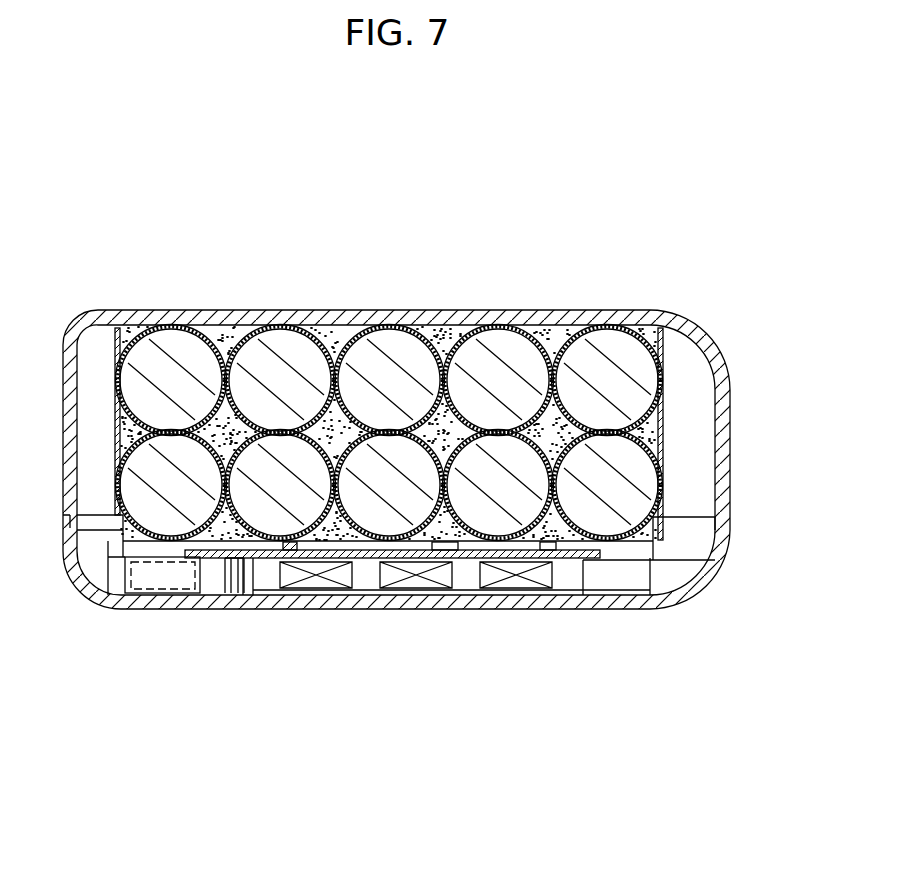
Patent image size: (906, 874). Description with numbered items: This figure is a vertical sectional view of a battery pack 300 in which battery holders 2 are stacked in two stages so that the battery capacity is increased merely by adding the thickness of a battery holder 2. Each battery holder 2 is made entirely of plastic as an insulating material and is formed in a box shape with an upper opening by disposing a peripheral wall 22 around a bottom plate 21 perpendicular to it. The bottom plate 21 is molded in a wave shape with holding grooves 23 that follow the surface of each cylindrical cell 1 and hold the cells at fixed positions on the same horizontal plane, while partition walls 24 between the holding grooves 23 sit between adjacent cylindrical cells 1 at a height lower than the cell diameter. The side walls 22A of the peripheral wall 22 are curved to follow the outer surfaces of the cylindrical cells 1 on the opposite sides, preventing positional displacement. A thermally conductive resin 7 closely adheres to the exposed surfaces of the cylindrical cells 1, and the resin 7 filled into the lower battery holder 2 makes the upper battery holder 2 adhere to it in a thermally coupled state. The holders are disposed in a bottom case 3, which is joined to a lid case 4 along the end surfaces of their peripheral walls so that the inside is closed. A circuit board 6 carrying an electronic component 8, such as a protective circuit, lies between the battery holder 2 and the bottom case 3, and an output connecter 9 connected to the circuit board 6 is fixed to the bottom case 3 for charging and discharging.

The battery pack 300 is at (678, 213).
The battery holder 2 is at (687, 128).
The bottom plate 21 is at (358, 312).
The peripheral wall 22 is at (417, 465).
The side wall 22A is at (92, 312).
The cylindrical cell 1 is at (178, 352).
The thermally conductive resin 7 is at (228, 330).
The partition wall 24 is at (262, 345).
The lid case 4 is at (449, 330).
The bottom case 3 is at (493, 600).
The holding groove 23 is at (288, 548).
The electronic component 8 is at (413, 580).
The output connecter 9 is at (160, 583).
The circuit board 6 is at (240, 593).